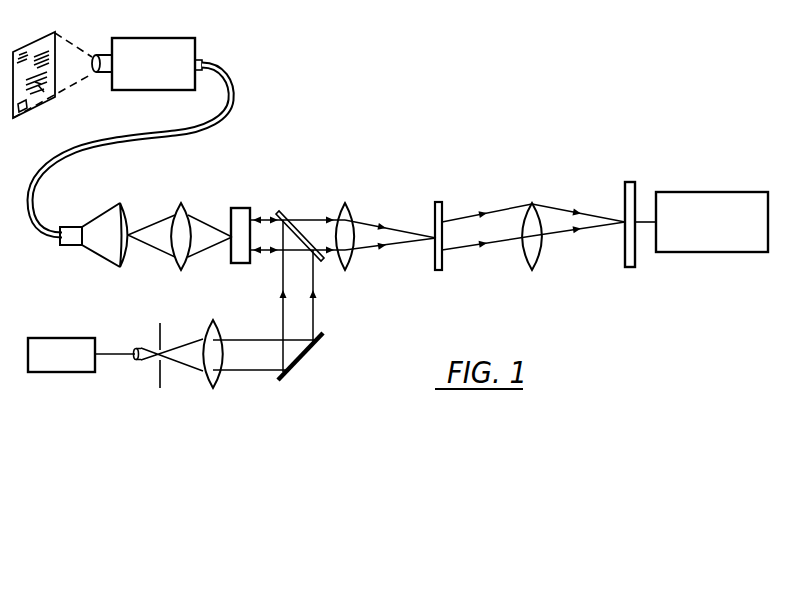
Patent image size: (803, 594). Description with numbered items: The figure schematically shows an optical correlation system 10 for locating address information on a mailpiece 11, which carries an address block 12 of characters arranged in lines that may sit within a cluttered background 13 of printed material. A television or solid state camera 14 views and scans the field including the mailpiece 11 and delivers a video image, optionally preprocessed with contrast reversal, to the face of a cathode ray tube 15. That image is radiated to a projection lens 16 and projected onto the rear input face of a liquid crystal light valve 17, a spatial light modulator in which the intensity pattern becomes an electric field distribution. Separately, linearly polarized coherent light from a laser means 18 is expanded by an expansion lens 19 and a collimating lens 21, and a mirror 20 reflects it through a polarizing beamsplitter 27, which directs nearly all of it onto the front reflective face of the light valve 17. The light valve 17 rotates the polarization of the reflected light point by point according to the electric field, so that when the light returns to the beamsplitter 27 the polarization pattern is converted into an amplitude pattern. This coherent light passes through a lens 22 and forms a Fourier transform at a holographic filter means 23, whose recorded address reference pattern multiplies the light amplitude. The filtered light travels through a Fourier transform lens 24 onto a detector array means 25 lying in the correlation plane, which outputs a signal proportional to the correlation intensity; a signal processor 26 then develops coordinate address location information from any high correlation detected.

The optical correlation system 10 is at (264, 145).
The mailpiece 11 is at (27, 45).
The address block 12 is at (18, 112).
The cluttered background 13 is at (39, 86).
The camera 14 is at (163, 38).
The cathode ray tube 15 is at (117, 207).
The projection lens 16 is at (182, 203).
The liquid crystal light valve 17 is at (240, 208).
The laser means 18 is at (57, 372).
The expansion lens 19 is at (138, 360).
The mirror 20 is at (311, 356).
The collimating lens 21 is at (212, 388).
The lens 22 is at (351, 258).
The holographic filter means 23 is at (440, 262).
The Fourier transform lens 24 is at (534, 262).
The detector array means 25 is at (628, 268).
The signal processor 26 is at (702, 252).
The polarizing beamsplitter 27 is at (297, 232).